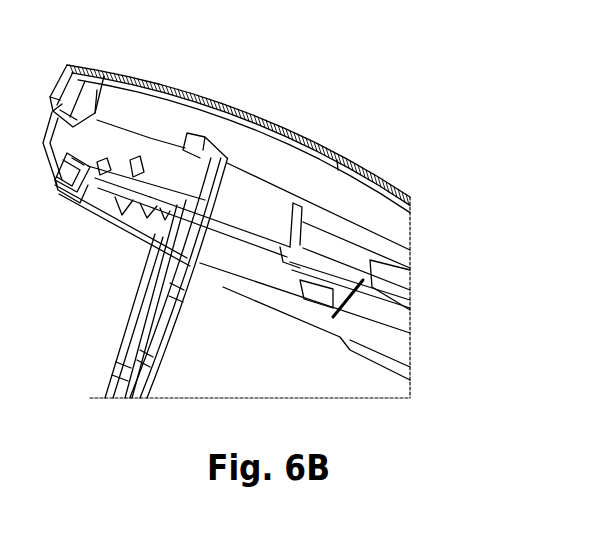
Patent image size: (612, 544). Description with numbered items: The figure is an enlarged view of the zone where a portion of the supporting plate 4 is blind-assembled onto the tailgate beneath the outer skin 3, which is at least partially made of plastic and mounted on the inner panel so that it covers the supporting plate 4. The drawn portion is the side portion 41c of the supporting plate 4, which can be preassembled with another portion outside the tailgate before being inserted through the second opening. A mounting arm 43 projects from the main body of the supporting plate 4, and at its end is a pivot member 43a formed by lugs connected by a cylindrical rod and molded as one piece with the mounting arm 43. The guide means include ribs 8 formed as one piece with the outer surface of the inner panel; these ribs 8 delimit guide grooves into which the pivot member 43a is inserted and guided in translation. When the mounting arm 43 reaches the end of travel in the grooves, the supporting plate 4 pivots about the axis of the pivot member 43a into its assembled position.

The outer skin 3 is at (280, 122).
The supporting plate 4 is at (172, 293).
The side portion of the supporting plate 41c is at (158, 370).
The mounting arm 43 is at (163, 214).
The pivot member 43a is at (78, 202).
The ribs 8 is at (80, 215).